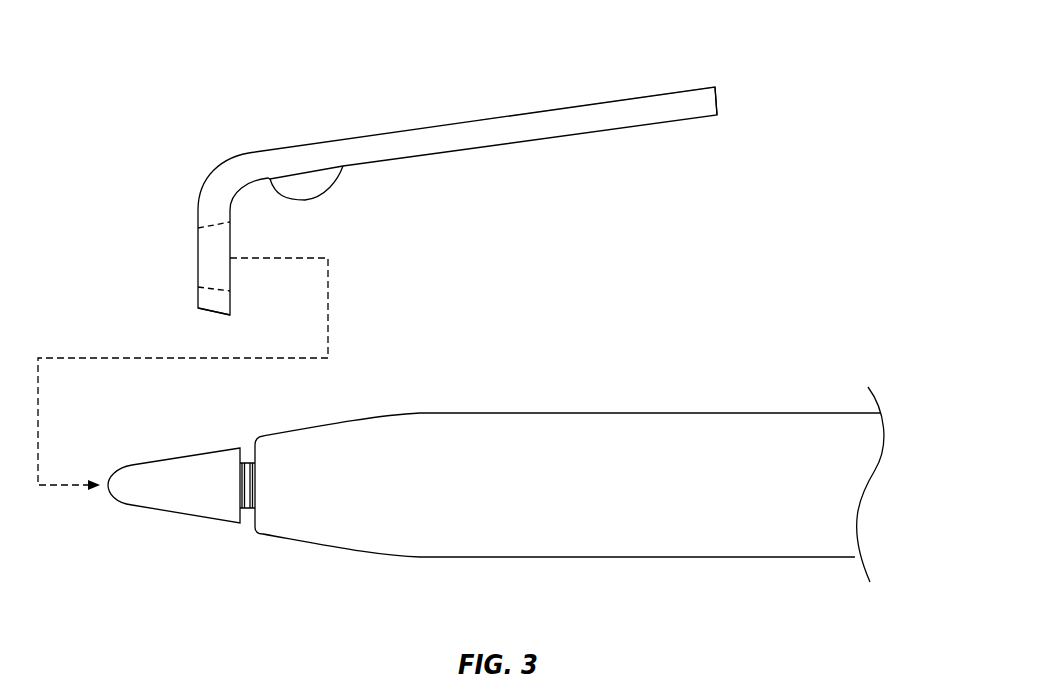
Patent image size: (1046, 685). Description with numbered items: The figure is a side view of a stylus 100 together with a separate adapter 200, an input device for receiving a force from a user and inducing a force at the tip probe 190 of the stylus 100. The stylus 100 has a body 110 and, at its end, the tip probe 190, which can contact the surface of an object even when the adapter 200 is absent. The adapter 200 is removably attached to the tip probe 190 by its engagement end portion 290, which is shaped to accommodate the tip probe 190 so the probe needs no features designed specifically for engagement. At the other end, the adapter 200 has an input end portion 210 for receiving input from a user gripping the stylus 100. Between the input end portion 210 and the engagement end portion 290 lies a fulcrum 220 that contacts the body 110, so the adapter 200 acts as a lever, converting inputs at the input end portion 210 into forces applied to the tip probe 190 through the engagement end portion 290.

The stylus 100 is at (113, 339).
The body 110 is at (693, 558).
The tip probe 190 is at (110, 490).
The adapter 200 is at (213, 163).
The input end portion 210 is at (632, 96).
The fulcrum 220 is at (311, 184).
The engagement end portion 290 is at (198, 228).